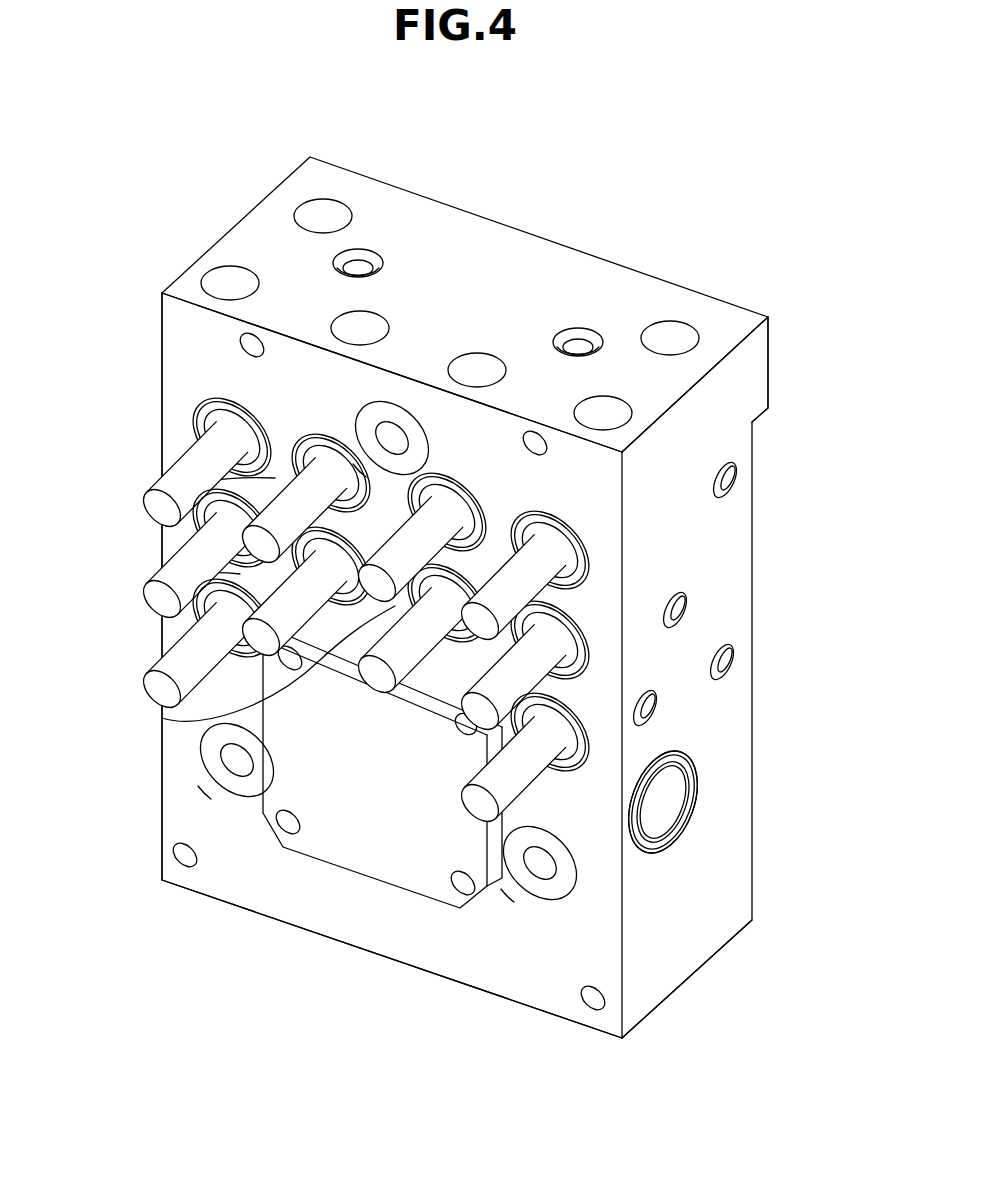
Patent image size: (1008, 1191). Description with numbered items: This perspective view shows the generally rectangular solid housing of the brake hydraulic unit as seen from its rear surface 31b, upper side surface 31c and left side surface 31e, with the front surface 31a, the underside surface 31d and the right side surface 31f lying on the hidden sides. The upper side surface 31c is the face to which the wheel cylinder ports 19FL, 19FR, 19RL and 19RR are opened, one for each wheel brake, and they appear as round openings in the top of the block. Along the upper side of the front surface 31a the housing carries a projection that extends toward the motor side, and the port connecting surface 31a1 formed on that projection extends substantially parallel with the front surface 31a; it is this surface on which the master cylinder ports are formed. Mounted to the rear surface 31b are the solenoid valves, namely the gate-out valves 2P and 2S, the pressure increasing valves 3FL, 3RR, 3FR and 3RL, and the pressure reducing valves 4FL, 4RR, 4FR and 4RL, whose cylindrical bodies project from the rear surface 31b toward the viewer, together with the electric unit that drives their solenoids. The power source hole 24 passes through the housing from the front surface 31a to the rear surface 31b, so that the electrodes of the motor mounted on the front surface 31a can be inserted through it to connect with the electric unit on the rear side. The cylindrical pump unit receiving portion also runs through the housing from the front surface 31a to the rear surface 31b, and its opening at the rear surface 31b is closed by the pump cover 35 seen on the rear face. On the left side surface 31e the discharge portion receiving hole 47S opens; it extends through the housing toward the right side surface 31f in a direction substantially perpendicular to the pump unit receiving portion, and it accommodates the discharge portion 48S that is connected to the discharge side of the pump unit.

The wheel cylinder port 19RR is at (217, 283).
The wheel cylinder port 19FL is at (373, 332).
The wheel cylinder port 19FR is at (492, 370).
The wheel cylinder port 19RL is at (610, 408).
The upper side surface 31c is at (687, 298).
The port connecting surface 31a1 is at (768, 362).
The front surface 31a is at (752, 865).
The rear surface 31b is at (243, 880).
The underside surface 31d is at (573, 1022).
The left side surface 31e is at (652, 963).
The right side surface 31f is at (158, 787).
The pressure increasing valve 3RR is at (183, 463).
The pressure increasing valve 3FL is at (222, 483).
The pressure increasing valve 3FR is at (520, 588).
The pressure increasing valve 3RL is at (562, 603).
The pressure reducing valve 4RR is at (183, 557).
The pressure reducing valve 4FL is at (278, 595).
The pressure reducing valve 4FR is at (373, 678).
The pressure reducing valve 4RL is at (477, 708).
The gate-out valve 2P is at (183, 657).
The gate-out valve 2S is at (507, 777).
The power source hole 24 is at (247, 717).
The pump cover 35 is at (272, 802).
The discharge portion 48S is at (668, 800).
The discharge portion receiving hole 47S is at (663, 848).